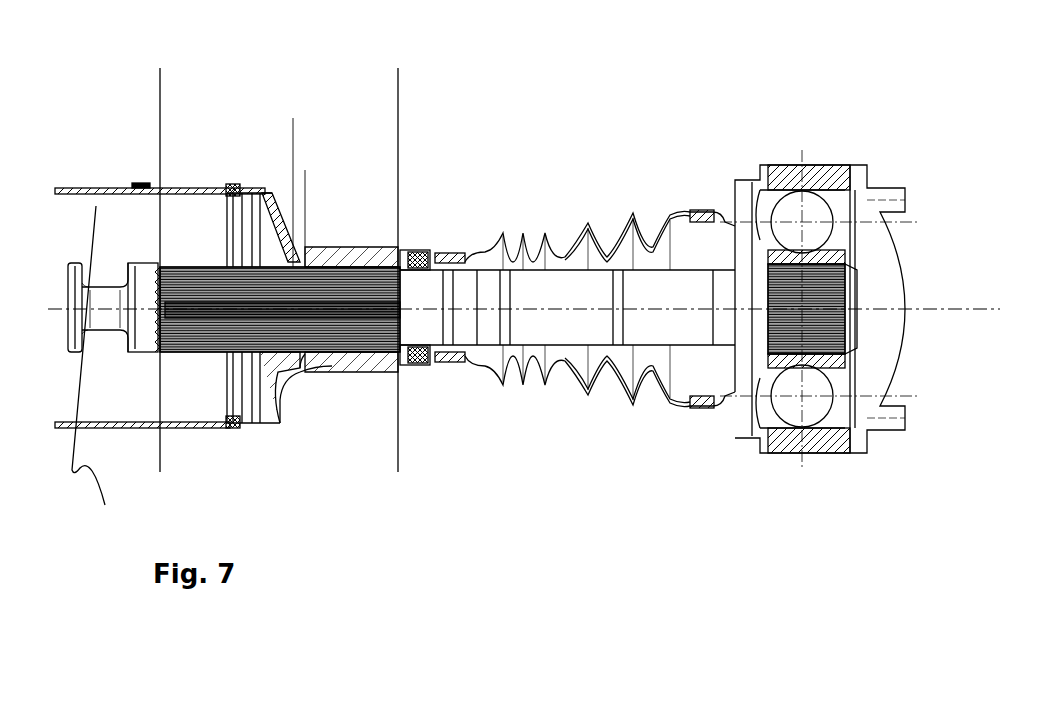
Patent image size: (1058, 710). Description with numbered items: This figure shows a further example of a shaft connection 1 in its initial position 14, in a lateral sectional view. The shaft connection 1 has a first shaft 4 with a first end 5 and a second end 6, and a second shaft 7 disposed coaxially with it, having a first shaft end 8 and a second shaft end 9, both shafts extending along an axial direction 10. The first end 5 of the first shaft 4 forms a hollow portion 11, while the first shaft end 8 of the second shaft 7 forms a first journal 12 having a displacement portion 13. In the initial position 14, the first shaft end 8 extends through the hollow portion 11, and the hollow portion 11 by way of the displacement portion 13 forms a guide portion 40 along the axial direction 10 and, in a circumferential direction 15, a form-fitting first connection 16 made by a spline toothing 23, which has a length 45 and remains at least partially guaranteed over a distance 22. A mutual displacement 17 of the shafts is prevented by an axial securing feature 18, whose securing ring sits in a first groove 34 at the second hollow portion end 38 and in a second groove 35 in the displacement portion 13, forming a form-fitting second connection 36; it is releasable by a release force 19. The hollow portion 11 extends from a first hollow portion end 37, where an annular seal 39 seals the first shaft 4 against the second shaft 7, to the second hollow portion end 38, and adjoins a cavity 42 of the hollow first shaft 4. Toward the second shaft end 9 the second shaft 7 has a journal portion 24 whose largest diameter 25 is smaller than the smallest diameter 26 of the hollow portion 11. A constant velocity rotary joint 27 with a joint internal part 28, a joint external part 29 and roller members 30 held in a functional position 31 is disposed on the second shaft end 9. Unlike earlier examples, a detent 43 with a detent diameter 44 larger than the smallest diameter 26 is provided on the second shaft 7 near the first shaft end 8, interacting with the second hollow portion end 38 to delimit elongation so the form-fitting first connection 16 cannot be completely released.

The shaft connection 1 is at (707, 72).
The first shaft 4 is at (190, 190).
The first end 5 is at (415, 357).
The second end 6 is at (148, 167).
The second shaft 7 is at (603, 212).
The first shaft end 8 is at (88, 246).
The second shaft end 9 is at (857, 340).
The axial direction 10 is at (80, 309).
The hollow portion 11 is at (398, 125).
The first journal 12 is at (465, 265).
The displacement portion 13 is at (398, 78).
The initial position 14 is at (426, 150).
The circumferential direction 15 is at (645, 325).
The form-fitting first connection 16 is at (371, 193).
The mutual displacement 17 is at (325, 243).
The axial securing feature 18 is at (304, 264).
The release force 19 is at (60, 288).
The distance 22 is at (398, 465).
The spline toothing 23 is at (248, 345).
The journal portion 24 is at (398, 78).
The largest diameter 25 is at (558, 272).
The smallest diameter 26 is at (286, 329).
The constant velocity rotary joint 27 is at (864, 116).
The joint internal part 28 is at (798, 258).
The joint external part 29 is at (818, 172).
The roller members 30 is at (900, 222).
The functional position 31 is at (718, 425).
The first groove 34 is at (300, 352).
The second groove 35 is at (330, 262).
The form-fitting second connection 36 is at (268, 196).
The first hollow portion end 37 is at (416, 250).
The second hollow portion end 38 is at (292, 266).
The annular seal 39 is at (422, 366).
The guide portion 40 is at (398, 150).
The cavity 42 is at (250, 360).
The detent 43 is at (106, 366).
The detent diameter 44 is at (98, 352).
The length 45 is at (398, 178).